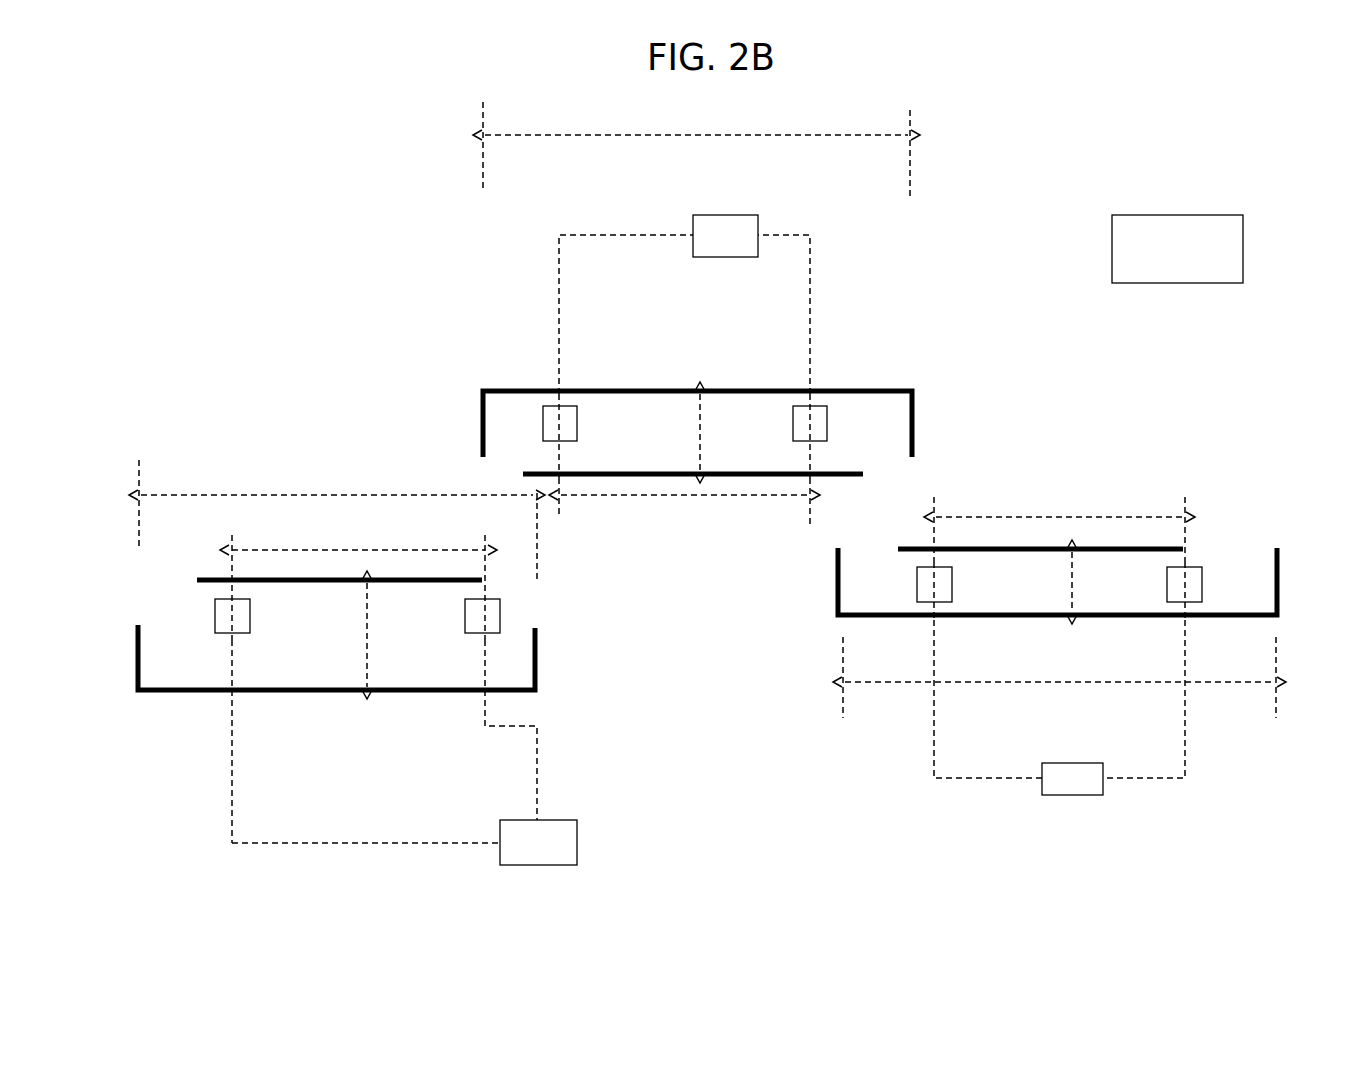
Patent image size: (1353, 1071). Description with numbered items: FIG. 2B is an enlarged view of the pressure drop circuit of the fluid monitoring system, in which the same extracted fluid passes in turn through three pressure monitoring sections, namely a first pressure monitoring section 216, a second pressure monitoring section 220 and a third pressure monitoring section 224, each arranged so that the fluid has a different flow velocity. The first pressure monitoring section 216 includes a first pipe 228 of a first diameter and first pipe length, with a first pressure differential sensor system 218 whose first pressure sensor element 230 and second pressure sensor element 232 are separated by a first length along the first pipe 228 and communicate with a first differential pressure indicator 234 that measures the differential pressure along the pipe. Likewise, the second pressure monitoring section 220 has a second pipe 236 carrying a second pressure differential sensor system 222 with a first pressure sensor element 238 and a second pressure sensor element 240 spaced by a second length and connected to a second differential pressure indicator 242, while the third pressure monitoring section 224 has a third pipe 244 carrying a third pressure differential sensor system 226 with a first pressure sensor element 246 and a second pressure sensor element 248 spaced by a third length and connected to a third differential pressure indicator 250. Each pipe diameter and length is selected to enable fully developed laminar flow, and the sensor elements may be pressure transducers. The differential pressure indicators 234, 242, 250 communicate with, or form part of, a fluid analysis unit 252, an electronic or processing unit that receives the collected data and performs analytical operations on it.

The first pressure monitoring section 216 is at (357, 752).
The first pressure differential sensor system 218 is at (590, 768).
The second pressure monitoring section 220 is at (709, 550).
The second pressure differential sensor system 222 is at (832, 311).
The third pressure monitoring section 224 is at (1208, 722).
The third pressure differential sensor system 226 is at (875, 704).
The first pipe 228 is at (283, 692).
The first pressure sensor element 230 is at (215, 618).
The second pressure sensor element 232 is at (500, 609).
The first differential pressure indicator 234 is at (533, 867).
The second pipe 236 is at (615, 476).
The first pressure sensor element 238 is at (543, 420).
The second pressure sensor element 240 is at (827, 423).
The second differential pressure indicator 242 is at (720, 220).
The third pipe 244 is at (1000, 617).
The first pressure sensor element 246 is at (917, 590).
The second pressure sensor element 248 is at (1202, 580).
The third differential pressure indicator 250 is at (1078, 796).
The fluid analysis unit 252 is at (1177, 249).